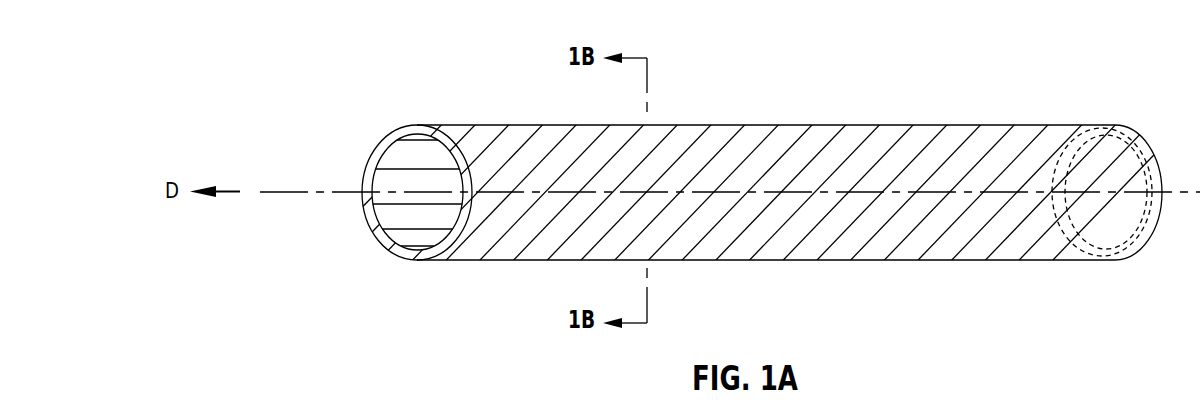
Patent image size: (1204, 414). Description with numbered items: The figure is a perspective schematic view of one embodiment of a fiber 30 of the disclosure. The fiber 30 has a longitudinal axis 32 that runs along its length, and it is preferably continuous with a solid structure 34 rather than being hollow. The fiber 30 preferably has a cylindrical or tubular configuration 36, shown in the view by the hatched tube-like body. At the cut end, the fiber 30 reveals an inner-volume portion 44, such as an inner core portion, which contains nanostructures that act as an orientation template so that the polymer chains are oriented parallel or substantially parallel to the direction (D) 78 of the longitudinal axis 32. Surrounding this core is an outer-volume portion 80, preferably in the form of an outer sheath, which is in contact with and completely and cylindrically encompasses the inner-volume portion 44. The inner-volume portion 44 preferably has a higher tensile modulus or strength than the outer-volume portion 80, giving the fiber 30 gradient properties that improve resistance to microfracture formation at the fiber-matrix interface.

The fiber 30 is at (995, 88).
The longitudinal axis 32 is at (1196, 190).
The solid structure 34 is at (418, 148).
The cylindrical or tubular configuration 36 is at (800, 124).
The inner-volume portion 44 is at (406, 231).
The direction (D) 78 is at (222, 190).
The outer-volume portion 80 is at (358, 159).